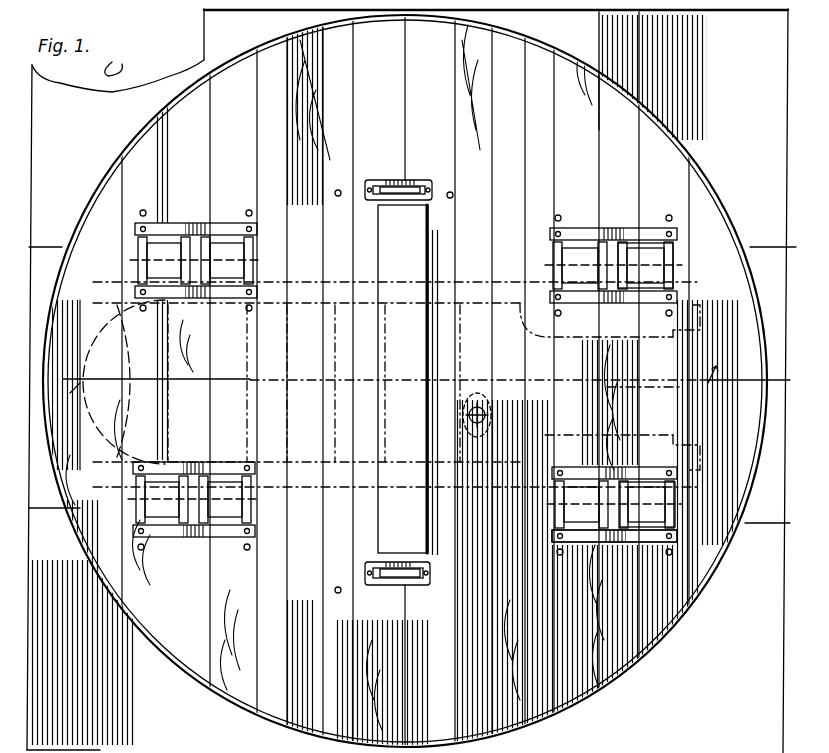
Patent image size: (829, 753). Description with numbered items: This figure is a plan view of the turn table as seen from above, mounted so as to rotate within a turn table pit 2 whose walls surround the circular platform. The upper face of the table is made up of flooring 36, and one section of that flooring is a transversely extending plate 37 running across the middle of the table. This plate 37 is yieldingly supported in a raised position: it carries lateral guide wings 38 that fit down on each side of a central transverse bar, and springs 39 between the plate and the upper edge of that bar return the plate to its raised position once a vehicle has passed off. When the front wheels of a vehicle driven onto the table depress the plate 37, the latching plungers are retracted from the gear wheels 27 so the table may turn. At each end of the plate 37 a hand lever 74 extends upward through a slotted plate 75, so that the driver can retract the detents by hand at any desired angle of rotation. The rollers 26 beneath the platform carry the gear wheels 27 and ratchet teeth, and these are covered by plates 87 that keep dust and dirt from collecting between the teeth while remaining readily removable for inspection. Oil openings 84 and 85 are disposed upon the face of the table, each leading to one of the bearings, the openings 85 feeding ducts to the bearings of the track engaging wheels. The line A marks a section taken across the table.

The turn table pit 2 is at (403, 376).
The center line A is at (426, 382).
The roller 26 is at (573, 252).
The gear wheel 27 is at (655, 268).
The flooring 36 is at (602, 81).
The plate 37 is at (470, 479).
The guide wings 38 is at (218, 696).
The springs 39 is at (581, 744).
The hand lever 74 is at (390, 190).
The slotted plate 75 is at (415, 186).
The oil opening 84 is at (447, 494).
The oil opening 85 is at (406, 387).
The plate 87 is at (625, 543).